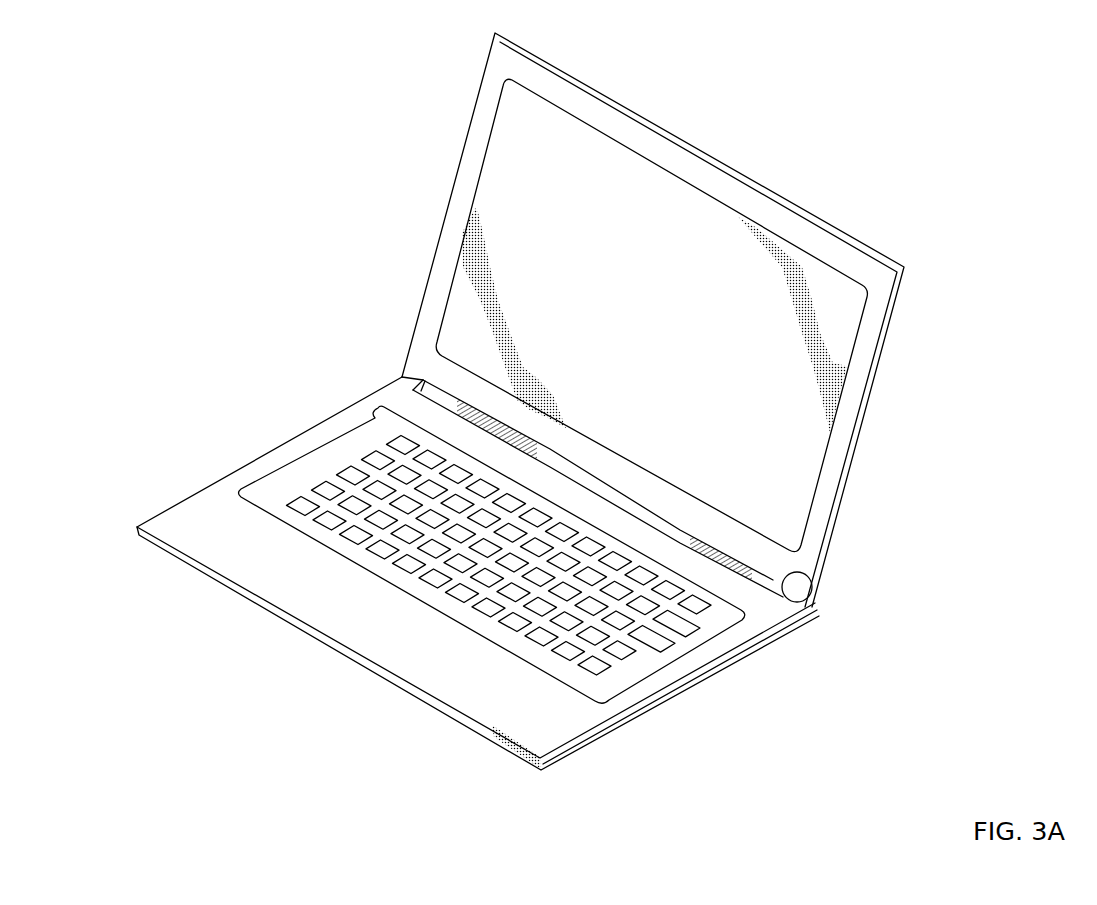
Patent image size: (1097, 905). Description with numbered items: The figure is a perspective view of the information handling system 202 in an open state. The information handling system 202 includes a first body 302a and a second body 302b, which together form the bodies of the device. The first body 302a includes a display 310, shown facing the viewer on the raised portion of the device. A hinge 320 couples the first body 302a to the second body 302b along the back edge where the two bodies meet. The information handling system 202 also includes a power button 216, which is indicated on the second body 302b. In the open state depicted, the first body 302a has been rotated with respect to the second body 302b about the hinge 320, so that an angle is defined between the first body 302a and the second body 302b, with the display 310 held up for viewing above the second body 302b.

The information handling system 202 is at (894, 105).
The power button 216 is at (693, 620).
The first body 302a is at (851, 440).
The second body 302b is at (270, 457).
The display 310 is at (810, 258).
The hinge 320 is at (821, 593).